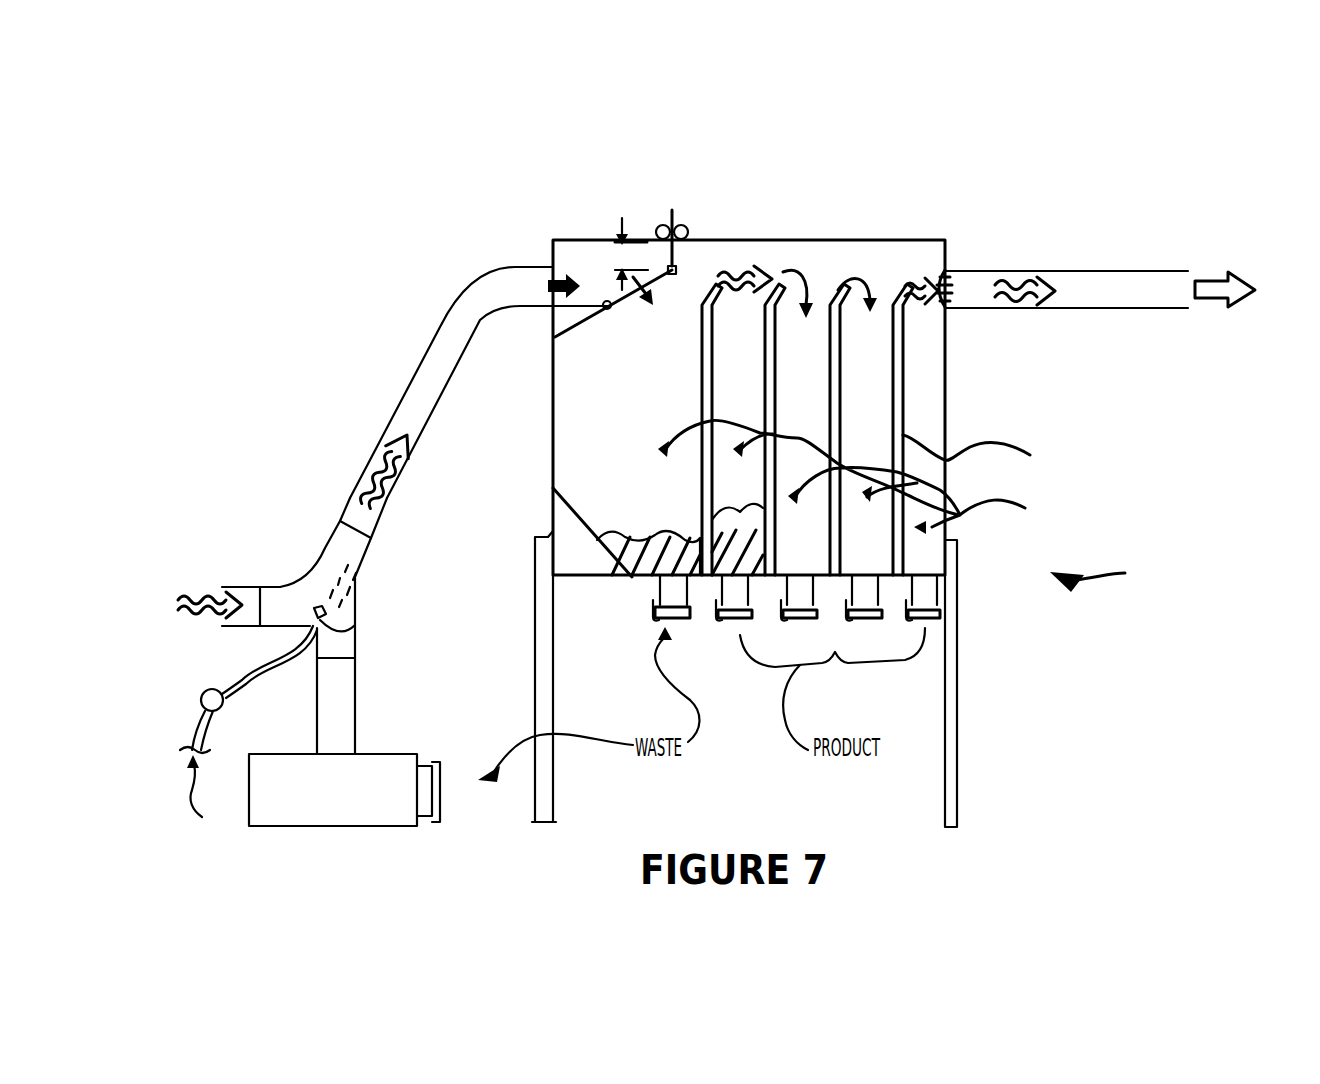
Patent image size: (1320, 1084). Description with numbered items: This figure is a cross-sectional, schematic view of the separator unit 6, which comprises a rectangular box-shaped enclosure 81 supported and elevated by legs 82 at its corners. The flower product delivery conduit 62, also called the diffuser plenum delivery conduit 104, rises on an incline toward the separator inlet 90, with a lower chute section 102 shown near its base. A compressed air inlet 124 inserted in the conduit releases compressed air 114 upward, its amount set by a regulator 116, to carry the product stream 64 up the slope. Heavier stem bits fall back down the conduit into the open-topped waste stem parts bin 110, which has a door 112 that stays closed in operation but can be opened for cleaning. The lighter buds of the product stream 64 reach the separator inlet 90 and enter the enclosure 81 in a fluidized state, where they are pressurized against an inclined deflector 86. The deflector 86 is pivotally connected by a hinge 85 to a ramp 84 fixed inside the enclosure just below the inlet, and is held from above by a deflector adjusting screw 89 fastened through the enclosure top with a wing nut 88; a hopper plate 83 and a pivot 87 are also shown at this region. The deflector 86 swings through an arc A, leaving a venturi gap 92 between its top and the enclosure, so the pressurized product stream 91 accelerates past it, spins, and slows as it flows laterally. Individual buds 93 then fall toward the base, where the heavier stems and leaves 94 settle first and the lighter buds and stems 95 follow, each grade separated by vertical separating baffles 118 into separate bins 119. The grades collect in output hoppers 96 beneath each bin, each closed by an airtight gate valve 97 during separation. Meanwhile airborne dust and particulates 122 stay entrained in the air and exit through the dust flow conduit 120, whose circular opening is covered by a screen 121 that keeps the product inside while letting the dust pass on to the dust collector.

The separator unit 6 is at (1094, 575).
The flower product delivery conduit 62 is at (258, 585).
The product stream 64 is at (172, 608).
The enclosure 81 is at (800, 232).
The legs 82 is at (950, 672).
The hopper plate 83 is at (578, 514).
The ramp 84 is at (560, 322).
The hinge 85 is at (605, 313).
The deflector 86 is at (627, 295).
The pivot 87 is at (675, 272).
The wing nut 88 is at (682, 232).
The deflector adjusting screw 89 is at (670, 210).
The separator inlet 90 is at (560, 285).
The pressurized product stream 91 is at (738, 282).
The venturi gap 92 is at (620, 220).
The lavender buds/calyxes/corollas 93 is at (862, 275).
The heavier stems and leaves 94 is at (648, 525).
The lighter buds and stems 95 is at (745, 490).
The output hoppers 96 is at (657, 592).
The airtight gate valves 97 is at (690, 620).
The lower chute section 102 is at (323, 550).
The diffuser plenum delivery conduit 104 is at (447, 340).
The waste stem parts bin 110 is at (305, 803).
The door 112 is at (438, 797).
The compressed air 114 is at (202, 803).
The regulator 116 is at (200, 697).
The vertical separating baffles 118 is at (980, 451).
The bins 119 is at (855, 477).
The dust flow conduit 120 is at (1018, 270).
The screen 121 is at (955, 268).
The airborne dust and particulates 122 is at (998, 297).
The compressed air inlet 124 is at (338, 632).
The arc A is at (650, 290).